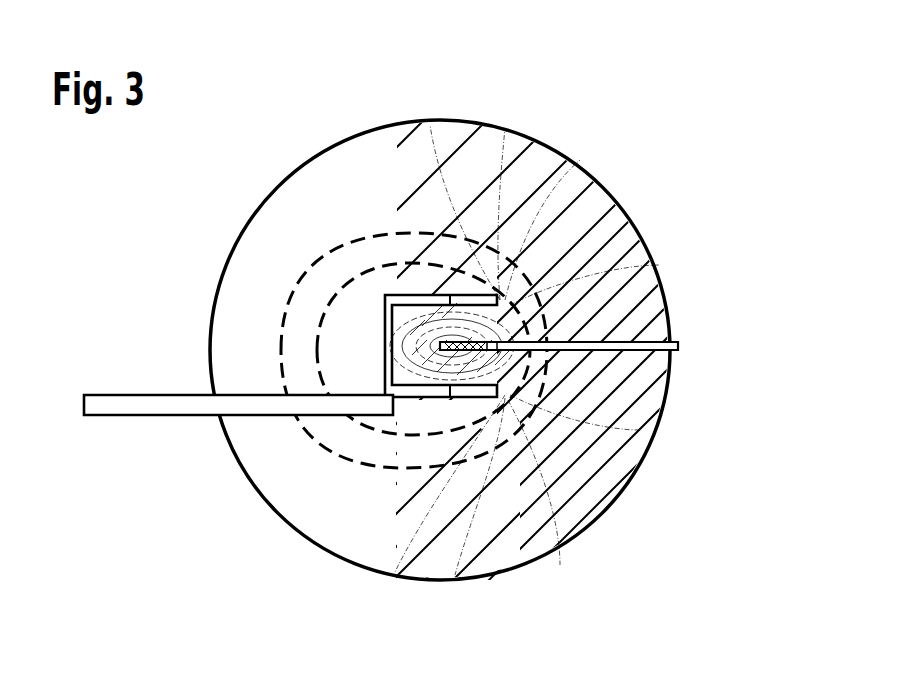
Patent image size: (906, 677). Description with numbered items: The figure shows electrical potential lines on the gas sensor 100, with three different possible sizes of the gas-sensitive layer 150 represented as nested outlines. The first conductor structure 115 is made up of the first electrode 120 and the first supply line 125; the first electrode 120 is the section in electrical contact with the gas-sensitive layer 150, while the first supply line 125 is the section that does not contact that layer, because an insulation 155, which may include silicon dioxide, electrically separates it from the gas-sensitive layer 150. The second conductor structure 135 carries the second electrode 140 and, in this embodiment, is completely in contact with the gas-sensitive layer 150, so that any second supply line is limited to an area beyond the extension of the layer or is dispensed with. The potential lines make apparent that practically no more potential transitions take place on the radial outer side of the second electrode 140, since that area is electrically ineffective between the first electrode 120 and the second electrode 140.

The gas sensor 100 is at (199, 191).
The first conductor structure 115 is at (453, 365).
The first electrode 120 is at (481, 334).
The first supply line 125 is at (618, 336).
The second conductor structure 135 is at (370, 250).
The second electrode 140 is at (412, 299).
The gas-sensitive layer 150 is at (222, 273).
The insulation 155 is at (678, 346).